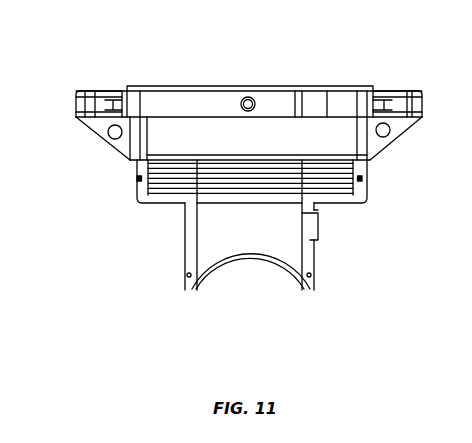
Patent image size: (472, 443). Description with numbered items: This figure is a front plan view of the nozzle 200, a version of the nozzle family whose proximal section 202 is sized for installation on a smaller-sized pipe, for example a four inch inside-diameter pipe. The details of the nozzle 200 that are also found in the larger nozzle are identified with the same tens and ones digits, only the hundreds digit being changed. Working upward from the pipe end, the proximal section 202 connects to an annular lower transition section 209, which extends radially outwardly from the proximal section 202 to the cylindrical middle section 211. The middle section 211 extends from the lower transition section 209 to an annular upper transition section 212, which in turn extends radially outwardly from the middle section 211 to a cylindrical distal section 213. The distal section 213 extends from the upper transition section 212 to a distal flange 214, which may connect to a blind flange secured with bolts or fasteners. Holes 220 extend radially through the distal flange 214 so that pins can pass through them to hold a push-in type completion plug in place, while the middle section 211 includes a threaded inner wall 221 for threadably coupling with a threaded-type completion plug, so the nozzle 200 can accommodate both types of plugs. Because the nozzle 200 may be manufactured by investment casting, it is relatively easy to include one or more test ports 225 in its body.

The nozzle 200 is at (97, 53).
The proximal section 202 is at (188, 263).
The lower transition section 209 is at (328, 193).
The middle section 211 is at (141, 196).
The upper transition section 212 is at (143, 153).
The distal section 213 is at (133, 138).
The distal flange 214 is at (102, 90).
The holes 220 is at (405, 99).
The threaded inner wall 221 is at (263, 180).
The test port 225 is at (307, 231).